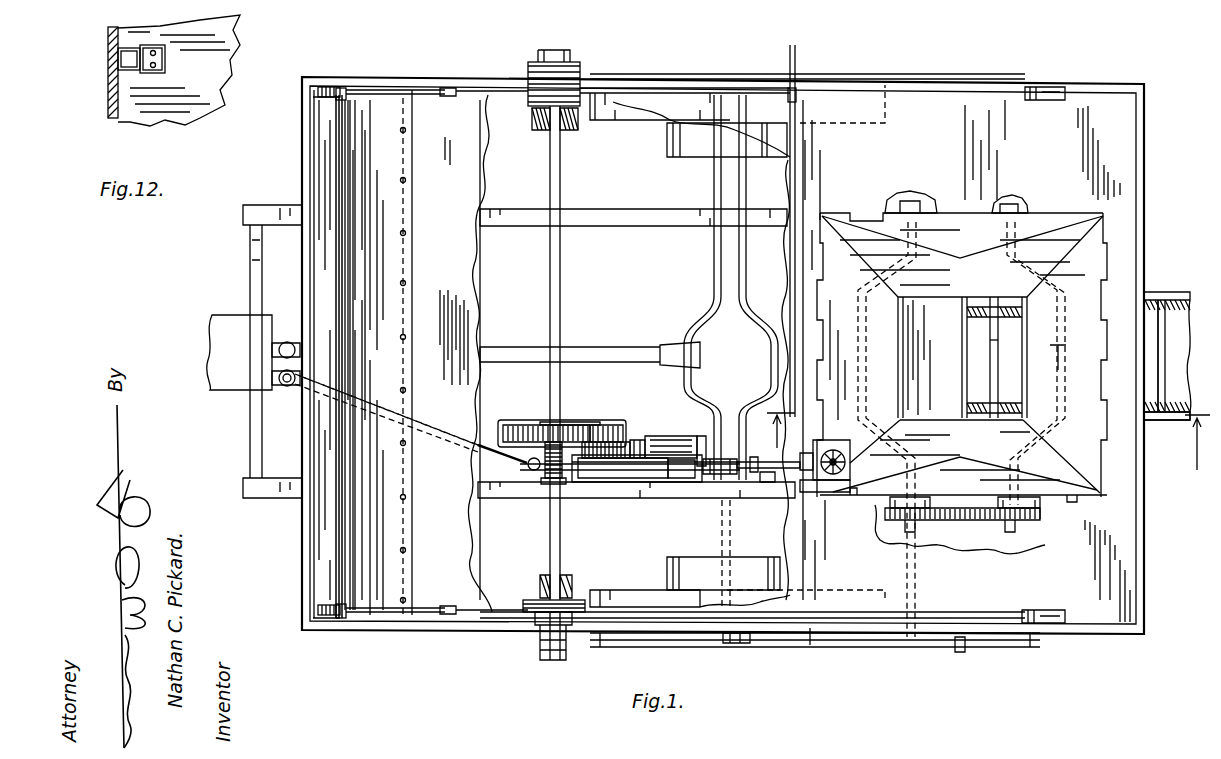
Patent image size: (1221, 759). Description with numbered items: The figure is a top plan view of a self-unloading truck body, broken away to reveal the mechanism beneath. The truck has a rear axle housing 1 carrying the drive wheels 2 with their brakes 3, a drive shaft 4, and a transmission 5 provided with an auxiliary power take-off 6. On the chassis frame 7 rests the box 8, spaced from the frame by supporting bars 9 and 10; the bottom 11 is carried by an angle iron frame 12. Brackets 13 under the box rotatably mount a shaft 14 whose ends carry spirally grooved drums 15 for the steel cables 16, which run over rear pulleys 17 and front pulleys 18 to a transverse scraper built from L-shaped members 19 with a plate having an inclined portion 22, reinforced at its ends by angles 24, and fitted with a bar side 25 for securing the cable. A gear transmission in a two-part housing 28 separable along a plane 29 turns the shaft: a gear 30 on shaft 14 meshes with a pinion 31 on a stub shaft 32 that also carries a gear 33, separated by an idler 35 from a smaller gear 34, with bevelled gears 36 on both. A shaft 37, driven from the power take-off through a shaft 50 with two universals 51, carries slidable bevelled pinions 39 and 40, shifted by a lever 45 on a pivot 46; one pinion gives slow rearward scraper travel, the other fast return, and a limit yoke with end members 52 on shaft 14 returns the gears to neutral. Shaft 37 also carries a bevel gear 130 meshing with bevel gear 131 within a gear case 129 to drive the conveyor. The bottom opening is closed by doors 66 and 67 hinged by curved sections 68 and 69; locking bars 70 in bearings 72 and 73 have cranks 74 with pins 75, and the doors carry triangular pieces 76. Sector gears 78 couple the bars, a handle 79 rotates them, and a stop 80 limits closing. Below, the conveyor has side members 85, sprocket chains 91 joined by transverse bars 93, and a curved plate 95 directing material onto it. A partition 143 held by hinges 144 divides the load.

In FIG. 1, the rear axle housing 1 is at (714, 262).
In FIG. 1, the drive wheels 2 is at (622, 122).
In FIG. 1, the brakes 3 is at (727, 356).
In FIG. 1, the drive shaft 4 is at (606, 350).
In FIG. 1, the transmission 5 is at (232, 318).
In FIG. 1, the auxiliary power take-off 6 is at (275, 378).
In FIG. 1, the chassis frame 7 is at (265, 214).
In FIG. 1, the box 8 is at (306, 140).
In FIG. 1, the supporting bar 9 is at (985, 444).
In FIG. 1, the supporting bar 10 is at (619, 215).
In FIG. 1, the bottom 11 is at (470, 268).
In FIG. 1, the angle iron frame 12 is at (780, 34).
In FIG. 1, the brackets 13 is at (568, 130).
In FIG. 1, the shaft 14 is at (557, 268).
In FIG. 1, the drums 15 is at (575, 62).
In FIG. 1, the steel cables 16 is at (490, 88).
In FIG. 1, the pulleys 17 is at (1047, 87).
In FIG. 1, the pulleys 18 is at (323, 85).
In FIG. 1, the L-shaped members 19 is at (312, 96).
In FIG. 1, the inclined portion 22 is at (365, 354).
In FIG. 1, the angles 24 is at (341, 87).
In FIG. 1, the bar side 25 is at (393, 88).
In FIG. 1, the housing 28 is at (523, 425).
In FIG. 1, the plane 29 is at (702, 436).
In FIG. 1, the gear 30 is at (568, 424).
In FIG. 1, the pinion 31 is at (620, 440).
In FIG. 1, the stub shaft 32 is at (606, 425).
In FIG. 1, the gear 33 is at (612, 482).
In FIG. 1, the gear 34 is at (665, 446).
In FIG. 1, the idler 35 is at (638, 445).
In FIG. 1, the bevelled gears 36 is at (626, 470).
In FIG. 1, the shaft 37 is at (703, 474).
In FIG. 1, the bevelled pinion 39 is at (668, 482).
In FIG. 1, the bevelled pinion 40 is at (577, 482).
In FIG. 1, the lever 45 is at (736, 645).
In FIG. 1, the pivot 46 is at (742, 472).
In FIG. 1, the shaft 50 is at (480, 448).
In FIG. 1, the universals 51 is at (289, 386).
In FIG. 1, the end members 52 is at (549, 484).
In FIG. 1, the doors 66 is at (1080, 278).
In FIG. 1, the doors 67 is at (1030, 245).
In FIG. 1, the curved sections 68 is at (1108, 295).
In FIG. 1, the hinge section 69 is at (1105, 262).
In FIG. 1, the locking bars 70 is at (935, 470).
In FIG. 1, the bearings 72 is at (995, 205).
In FIG. 1, the bearings 73 is at (905, 522).
In FIG. 1, the cranks 74 is at (858, 392).
In FIG. 1, the pins 75 is at (1062, 352).
In FIG. 1, the triangular pieces 76 is at (937, 236).
In FIG. 1, the sector-shaped gear 78 is at (950, 522).
In FIG. 1, the handle 79 is at (786, 650).
In FIG. 1, the stop 80 is at (959, 652).
In FIG. 1, the side members 85 is at (1172, 422).
In FIG. 1, the sprocket chains 91 is at (1160, 412).
In FIG. 1, the transverse bars 93 is at (994, 352).
In FIG. 1, the curved plate 95 is at (962, 335).
In FIG. 1, the gear case 129 is at (822, 448).
In FIG. 1, the bevel gear 130 is at (821, 460).
In FIG. 1, the bevel gear 131 is at (842, 492).
In FIG. 12, the partition 143 is at (205, 42).
In FIG. 1, the partition 143 is at (800, 126).
In FIG. 12, the hinges 144 is at (120, 60).
In FIG. 1, the hinges 144 is at (790, 88).